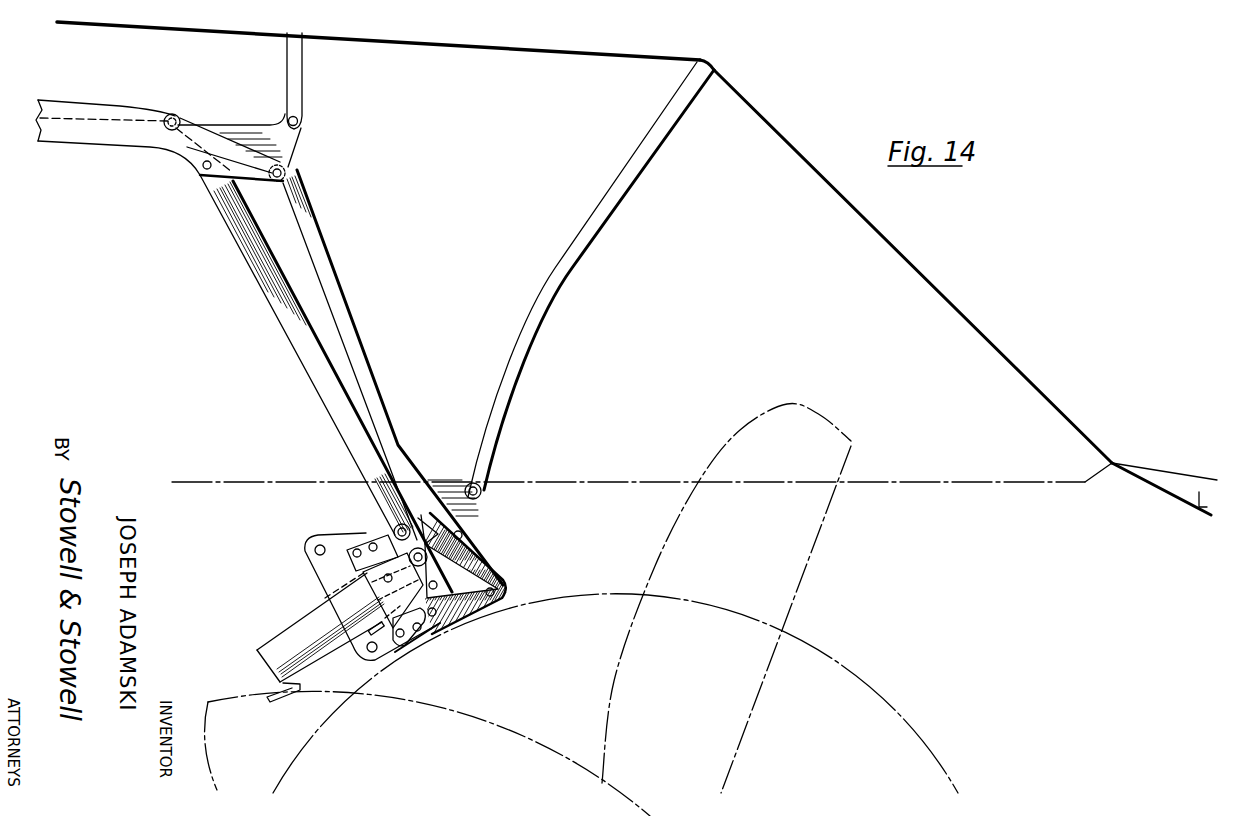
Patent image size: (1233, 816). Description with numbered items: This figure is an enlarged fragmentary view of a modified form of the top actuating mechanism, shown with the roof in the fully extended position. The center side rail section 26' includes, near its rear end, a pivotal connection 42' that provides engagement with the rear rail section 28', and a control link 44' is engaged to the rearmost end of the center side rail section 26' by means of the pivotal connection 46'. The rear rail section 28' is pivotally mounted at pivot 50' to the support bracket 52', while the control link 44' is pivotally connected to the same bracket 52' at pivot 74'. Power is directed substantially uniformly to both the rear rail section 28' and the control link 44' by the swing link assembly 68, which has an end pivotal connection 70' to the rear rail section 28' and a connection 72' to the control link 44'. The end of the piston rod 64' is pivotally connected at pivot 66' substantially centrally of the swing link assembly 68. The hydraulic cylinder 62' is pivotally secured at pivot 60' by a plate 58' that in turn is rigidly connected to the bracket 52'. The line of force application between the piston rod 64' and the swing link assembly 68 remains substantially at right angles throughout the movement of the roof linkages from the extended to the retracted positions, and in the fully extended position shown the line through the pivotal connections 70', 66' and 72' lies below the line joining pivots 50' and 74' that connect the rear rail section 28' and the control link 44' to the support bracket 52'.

The center side rail section 26' is at (118, 148).
The pivotal connection 42' is at (197, 180).
The pivotal connection 46' is at (262, 147).
The control link 44' is at (393, 377).
The rear rail section 28' is at (326, 383).
The end pivotal connection 70' is at (420, 498).
The pivot 66' is at (441, 512).
The pivot 50' is at (484, 518).
The connection 72' is at (478, 559).
The pivot 74' is at (515, 578).
The piston rod 64' is at (455, 636).
The plate 58' is at (418, 654).
The swing link assembly 68 is at (393, 555).
The pivot 60' is at (352, 541).
The support bracket 52' is at (351, 596).
The hydraulic cylinder 62' is at (315, 637).